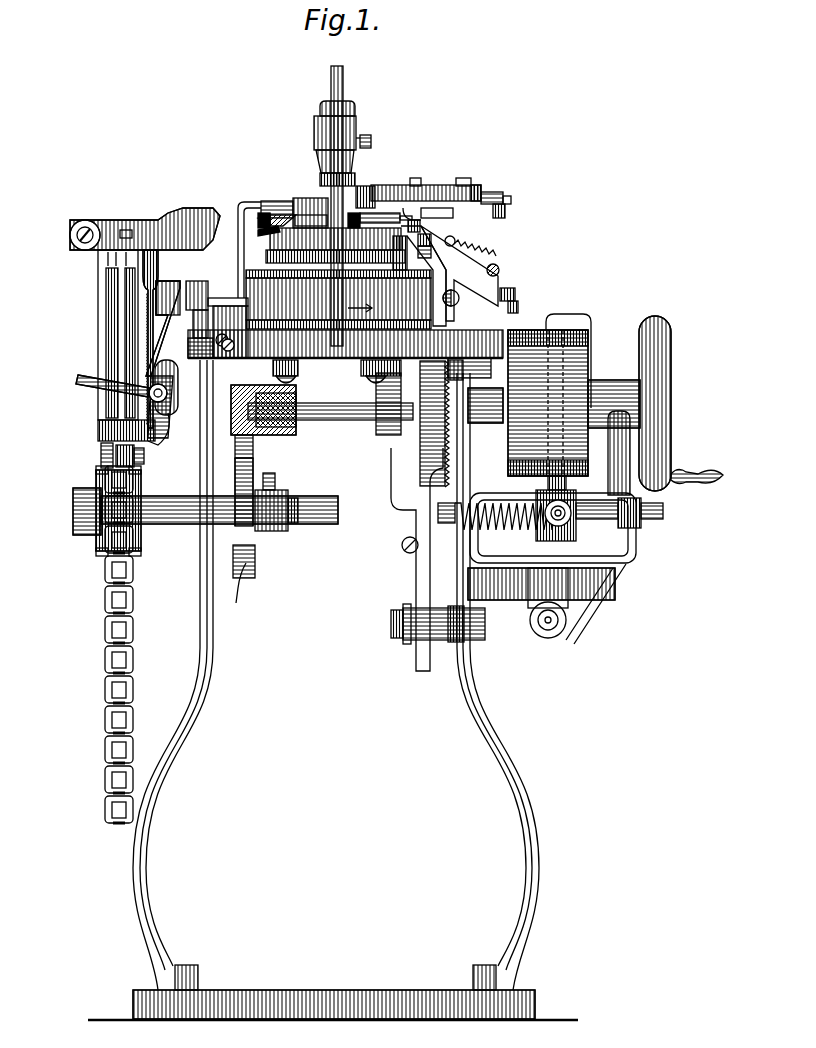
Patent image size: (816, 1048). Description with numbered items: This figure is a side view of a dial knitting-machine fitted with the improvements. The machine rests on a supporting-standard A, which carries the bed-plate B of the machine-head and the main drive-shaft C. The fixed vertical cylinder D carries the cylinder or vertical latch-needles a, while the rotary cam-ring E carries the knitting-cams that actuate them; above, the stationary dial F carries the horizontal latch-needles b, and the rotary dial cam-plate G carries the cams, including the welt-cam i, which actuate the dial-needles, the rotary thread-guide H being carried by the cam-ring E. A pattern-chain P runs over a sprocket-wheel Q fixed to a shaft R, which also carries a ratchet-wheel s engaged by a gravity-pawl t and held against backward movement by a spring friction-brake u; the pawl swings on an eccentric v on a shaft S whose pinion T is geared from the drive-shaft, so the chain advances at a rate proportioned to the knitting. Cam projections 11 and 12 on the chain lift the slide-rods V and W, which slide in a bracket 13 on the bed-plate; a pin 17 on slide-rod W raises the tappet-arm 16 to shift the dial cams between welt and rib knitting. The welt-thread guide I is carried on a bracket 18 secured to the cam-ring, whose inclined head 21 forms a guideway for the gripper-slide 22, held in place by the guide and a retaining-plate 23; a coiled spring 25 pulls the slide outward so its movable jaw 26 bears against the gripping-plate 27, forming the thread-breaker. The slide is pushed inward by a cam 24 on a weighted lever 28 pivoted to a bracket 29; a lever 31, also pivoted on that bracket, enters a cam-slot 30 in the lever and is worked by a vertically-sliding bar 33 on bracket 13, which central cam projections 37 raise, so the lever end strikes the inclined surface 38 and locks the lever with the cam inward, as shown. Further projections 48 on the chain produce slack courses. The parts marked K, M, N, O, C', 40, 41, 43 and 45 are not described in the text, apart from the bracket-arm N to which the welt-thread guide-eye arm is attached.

The spindle K is at (332, 92).
The arm M is at (393, 178).
The bracket-arm N is at (438, 178).
The plate O is at (441, 206).
The pattern-chain P is at (297, 502).
The pinion T is at (412, 470).
The rotary thread-guide H is at (265, 240).
The spring friction-brake u is at (262, 205).
The rotary dial cam-plate G is at (298, 196).
The cylinder or vertical latch-needles a is at (283, 219).
The plate 45 is at (309, 220).
The dial or horizontal latch-needles b is at (265, 233).
The welt-cam i is at (375, 213).
The pin 43 is at (404, 213).
The welt-thread guide I is at (412, 220).
The fixed vertical cylinder D is at (262, 240).
The rotary cam-ring E is at (338, 299).
The bed-plate B is at (345, 356).
The stationary dial F is at (419, 276).
The gripping-jaw 26 is at (426, 240).
The gripping-plate 27 is at (427, 253).
The coiled spring 25 is at (470, 245).
The inclined head 21 is at (459, 273).
The retaining-plate 23 is at (490, 264).
The welt-thread gripper-slide 22 is at (498, 284).
The stop 41 is at (520, 304).
The bracket 18 is at (443, 284).
The gear wheel C' is at (519, 402).
The main drive-shaft C is at (655, 405).
The shaft S is at (318, 408).
The eccentric v is at (226, 414).
The gravity-pawl t is at (228, 466).
The ratchet-wheel s is at (247, 552).
The tappet-arm 16 is at (185, 210).
The projecting pin 17 is at (126, 233).
The bracket 13 is at (98, 252).
The slide-rod V is at (104, 288).
The slide-rod W is at (120, 330).
The vertically-sliding bar 33 is at (147, 280).
The lever 28 is at (165, 359).
The cam 24 is at (196, 276).
The block 40 is at (228, 328).
The bracket 29 is at (170, 380).
The lever 31 is at (163, 392).
The inclined surface 38 is at (113, 392).
The cam-slot 30 is at (158, 425).
The cam projections 48 is at (93, 450).
The cam projections 12 is at (126, 450).
The central cam projections 37 is at (132, 456).
The cam projections 11 is at (87, 511).
The shaft R is at (219, 502).
The sprocket-wheel Q is at (94, 545).
The supporting-standard A is at (538, 848).